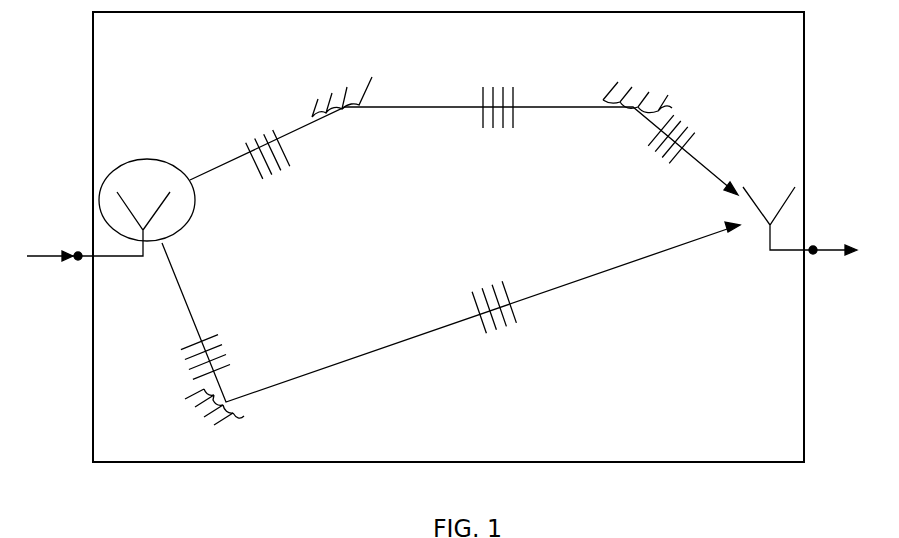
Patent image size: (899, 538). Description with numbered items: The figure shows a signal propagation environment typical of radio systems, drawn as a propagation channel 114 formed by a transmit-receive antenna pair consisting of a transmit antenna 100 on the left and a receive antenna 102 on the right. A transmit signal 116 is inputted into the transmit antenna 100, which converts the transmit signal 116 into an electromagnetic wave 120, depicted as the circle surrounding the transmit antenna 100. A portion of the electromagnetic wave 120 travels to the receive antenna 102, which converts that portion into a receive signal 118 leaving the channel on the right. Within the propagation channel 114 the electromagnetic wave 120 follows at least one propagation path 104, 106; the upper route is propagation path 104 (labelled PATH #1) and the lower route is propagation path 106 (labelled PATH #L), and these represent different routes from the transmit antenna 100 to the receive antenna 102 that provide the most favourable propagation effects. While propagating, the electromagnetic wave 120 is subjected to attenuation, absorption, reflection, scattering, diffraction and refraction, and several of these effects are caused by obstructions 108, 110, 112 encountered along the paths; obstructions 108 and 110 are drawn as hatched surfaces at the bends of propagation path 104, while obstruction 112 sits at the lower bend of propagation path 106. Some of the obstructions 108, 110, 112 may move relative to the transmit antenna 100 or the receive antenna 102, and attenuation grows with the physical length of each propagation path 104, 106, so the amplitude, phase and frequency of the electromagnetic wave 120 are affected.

The transmit antenna 100 is at (105, 258).
The receive antenna 102 is at (786, 252).
The propagation path 104 is at (432, 109).
The propagation path 106 is at (343, 362).
The obstruction 108 is at (313, 106).
The obstruction 110 is at (672, 108).
The obstruction 112 is at (244, 416).
The propagation channel 114 is at (93, 70).
The transmit signal 116 is at (32, 258).
The receive signal 118 is at (820, 252).
The electromagnetic wave 120 is at (187, 227).